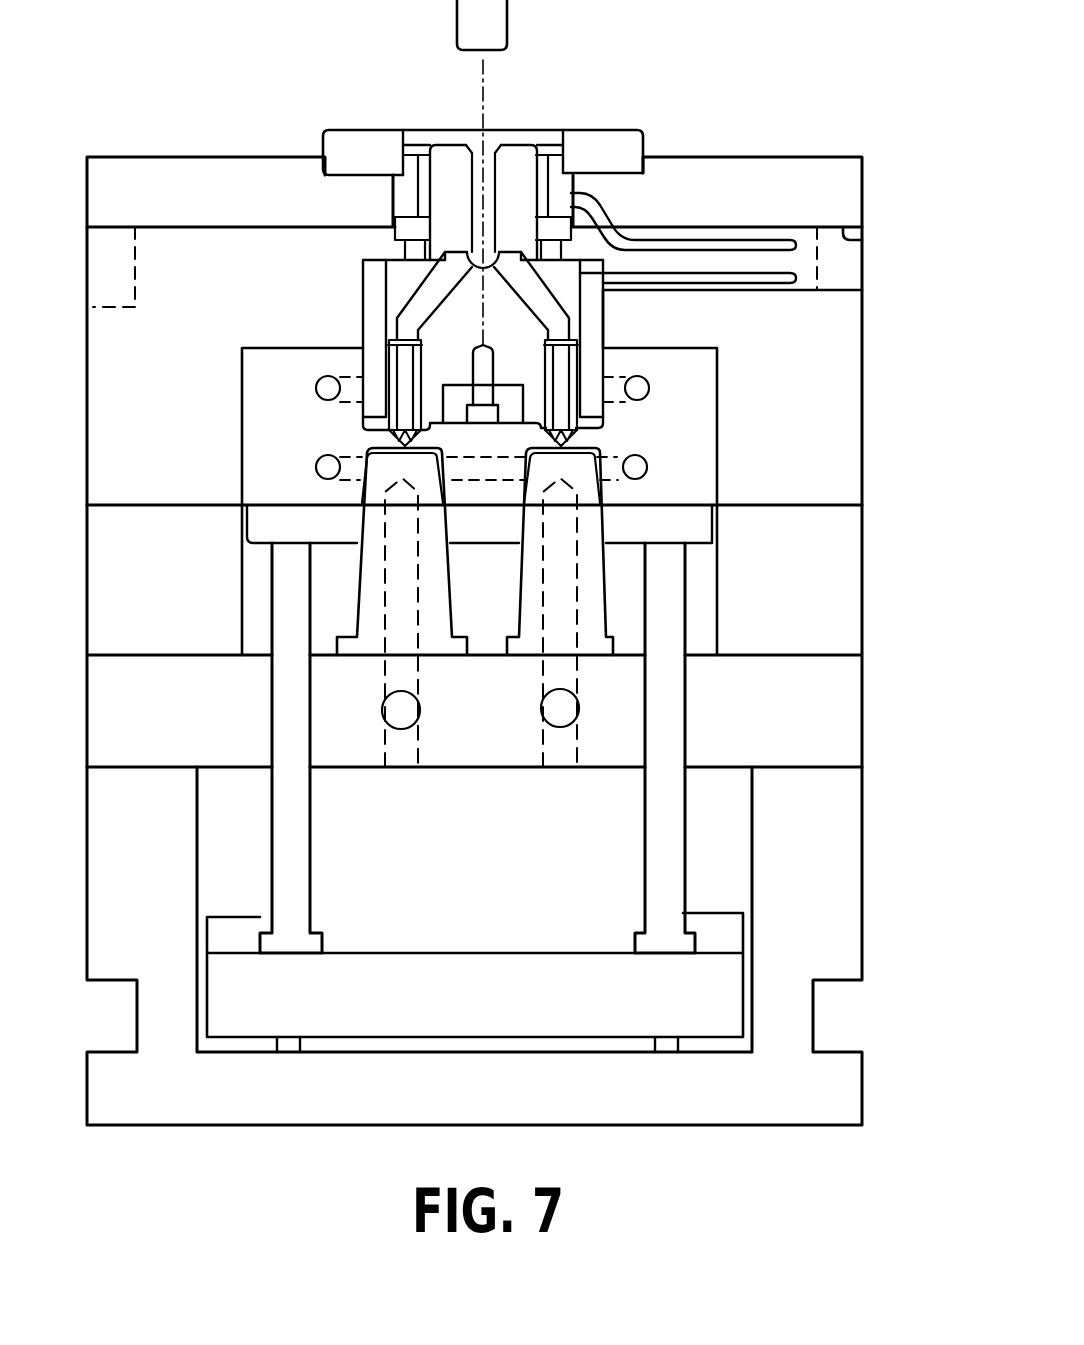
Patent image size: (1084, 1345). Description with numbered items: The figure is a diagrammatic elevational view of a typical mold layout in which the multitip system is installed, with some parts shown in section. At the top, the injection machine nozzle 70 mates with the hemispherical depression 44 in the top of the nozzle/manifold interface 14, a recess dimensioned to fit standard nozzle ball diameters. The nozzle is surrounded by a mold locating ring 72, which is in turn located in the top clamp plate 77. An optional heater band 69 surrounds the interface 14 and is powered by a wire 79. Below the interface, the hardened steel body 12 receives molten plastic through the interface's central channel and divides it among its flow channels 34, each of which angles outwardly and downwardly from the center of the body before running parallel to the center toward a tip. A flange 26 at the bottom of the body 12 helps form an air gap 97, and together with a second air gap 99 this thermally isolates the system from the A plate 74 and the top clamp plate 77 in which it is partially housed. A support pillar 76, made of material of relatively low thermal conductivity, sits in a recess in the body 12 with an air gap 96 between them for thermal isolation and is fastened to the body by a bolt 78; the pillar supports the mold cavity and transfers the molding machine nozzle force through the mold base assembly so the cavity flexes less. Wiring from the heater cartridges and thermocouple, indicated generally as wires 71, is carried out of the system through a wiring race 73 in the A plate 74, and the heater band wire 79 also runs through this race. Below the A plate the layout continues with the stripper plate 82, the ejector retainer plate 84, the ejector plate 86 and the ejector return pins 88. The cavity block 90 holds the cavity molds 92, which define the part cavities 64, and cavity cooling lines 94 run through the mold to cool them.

The body 12 is at (385, 295).
The nozzle/manifold interface 14 is at (518, 140).
The flange 26 is at (366, 422).
The flow channel 34 is at (427, 307).
The hemispherical depression 44 is at (478, 140).
The part cavity 64 is at (366, 482).
The heater band 69 is at (425, 190).
The injection machine nozzle 70 is at (493, 18).
The wires 71 is at (762, 284).
The mold locating ring 72 is at (612, 137).
The wiring race 73 is at (862, 250).
The A plate 74 is at (838, 393).
The support pillar 76 is at (507, 393).
The top clamp plate 77 is at (838, 182).
The bolt 78 is at (478, 362).
The wire 79 is at (758, 240).
The stripper plate 82 is at (832, 713).
The ejector retainer plate 84 is at (722, 928).
The ejector plate 86 is at (657, 1100).
The ejector return pins 88 is at (296, 848).
The cavity block 90 is at (262, 397).
The cavity mold 92 is at (525, 588).
The cavity cooling lines 94 is at (318, 384).
The air gap 96 is at (446, 402).
The air gap 97 is at (372, 318).
The air gap 99 is at (408, 205).